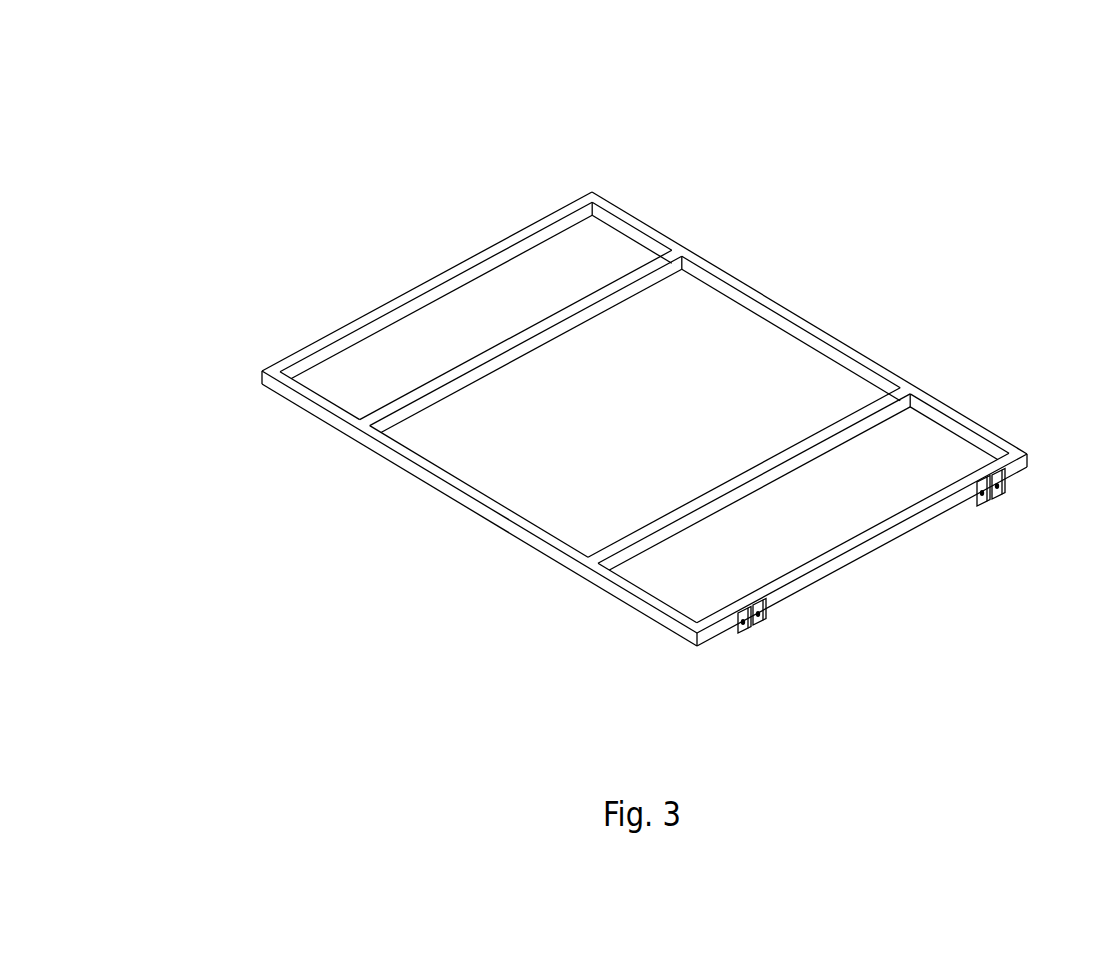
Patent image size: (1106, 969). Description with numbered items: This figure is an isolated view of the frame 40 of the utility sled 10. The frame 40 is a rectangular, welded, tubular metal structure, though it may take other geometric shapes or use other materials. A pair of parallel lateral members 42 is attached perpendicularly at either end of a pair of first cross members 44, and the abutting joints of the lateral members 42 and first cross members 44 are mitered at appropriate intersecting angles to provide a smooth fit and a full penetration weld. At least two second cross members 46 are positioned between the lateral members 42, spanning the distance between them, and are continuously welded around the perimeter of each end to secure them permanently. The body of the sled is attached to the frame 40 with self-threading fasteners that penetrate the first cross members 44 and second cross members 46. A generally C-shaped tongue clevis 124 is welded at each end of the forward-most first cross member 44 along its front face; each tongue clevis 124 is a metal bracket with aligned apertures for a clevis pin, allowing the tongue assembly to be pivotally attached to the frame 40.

The utility sled 10 is at (205, 140).
The frame 40 is at (254, 371).
The lateral members 42 is at (797, 320).
The first cross members 44 is at (388, 311).
The second cross members 46 is at (663, 261).
The tongue clevis 124 is at (1004, 497).